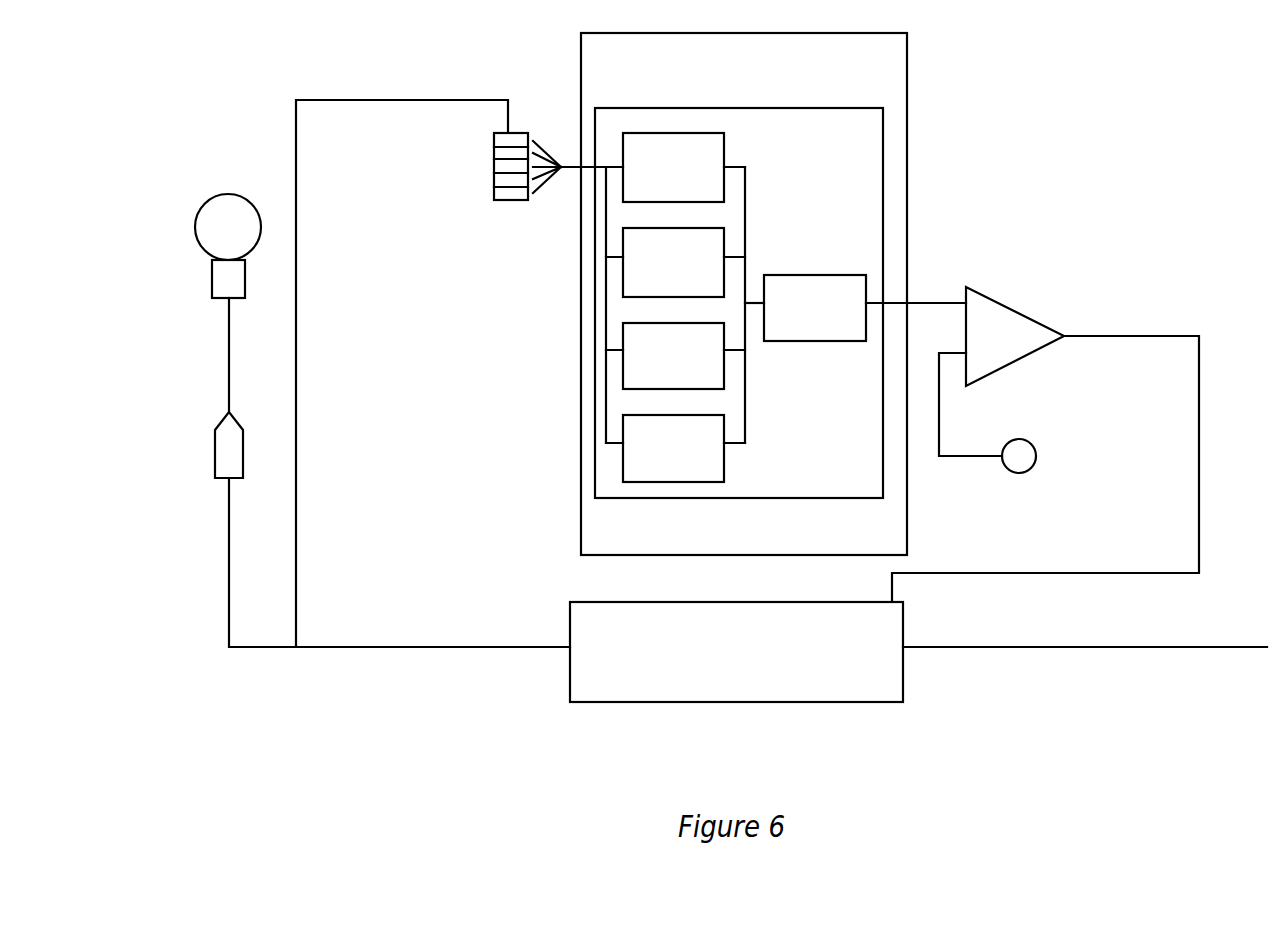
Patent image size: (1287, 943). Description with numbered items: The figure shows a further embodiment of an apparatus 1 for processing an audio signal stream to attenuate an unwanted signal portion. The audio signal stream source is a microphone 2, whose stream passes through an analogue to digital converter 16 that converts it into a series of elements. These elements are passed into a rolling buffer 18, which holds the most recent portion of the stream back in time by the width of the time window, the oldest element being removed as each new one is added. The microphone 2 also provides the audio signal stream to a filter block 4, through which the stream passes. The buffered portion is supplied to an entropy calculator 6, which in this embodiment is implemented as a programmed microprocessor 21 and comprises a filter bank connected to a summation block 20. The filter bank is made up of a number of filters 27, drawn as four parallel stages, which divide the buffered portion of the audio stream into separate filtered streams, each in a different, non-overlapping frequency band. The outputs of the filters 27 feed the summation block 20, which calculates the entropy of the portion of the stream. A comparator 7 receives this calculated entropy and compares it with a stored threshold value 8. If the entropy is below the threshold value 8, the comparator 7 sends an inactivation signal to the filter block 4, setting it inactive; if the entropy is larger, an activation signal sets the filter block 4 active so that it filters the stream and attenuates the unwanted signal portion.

The apparatus 1 is at (148, 165).
The microphone 2 is at (215, 237).
The analogue to digital converter 16 is at (212, 450).
The rolling buffer 18 is at (461, 191).
The entropy calculator 6 is at (570, 77).
The microprocessor 21 is at (857, 100).
The filters 27 is at (675, 307).
The summation block 20 is at (805, 308).
The comparator 7 is at (965, 336).
The threshold value 8 is at (987, 413).
The filter block 4 is at (736, 652).